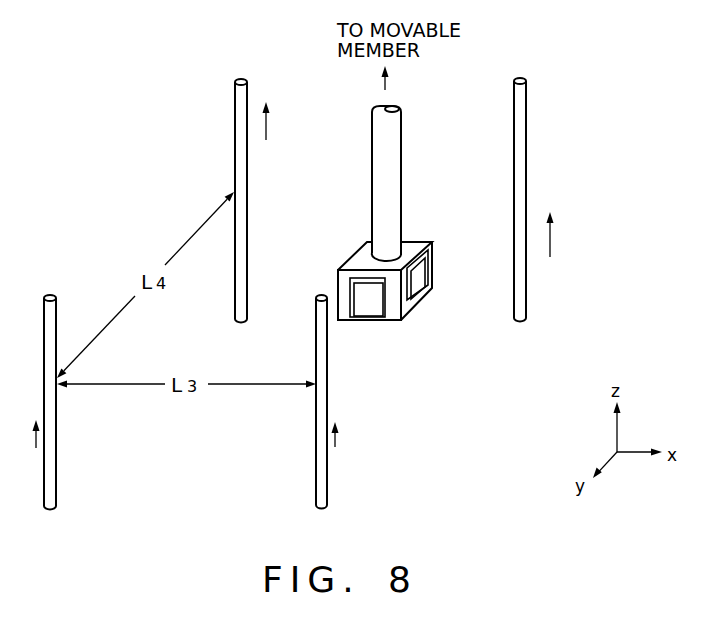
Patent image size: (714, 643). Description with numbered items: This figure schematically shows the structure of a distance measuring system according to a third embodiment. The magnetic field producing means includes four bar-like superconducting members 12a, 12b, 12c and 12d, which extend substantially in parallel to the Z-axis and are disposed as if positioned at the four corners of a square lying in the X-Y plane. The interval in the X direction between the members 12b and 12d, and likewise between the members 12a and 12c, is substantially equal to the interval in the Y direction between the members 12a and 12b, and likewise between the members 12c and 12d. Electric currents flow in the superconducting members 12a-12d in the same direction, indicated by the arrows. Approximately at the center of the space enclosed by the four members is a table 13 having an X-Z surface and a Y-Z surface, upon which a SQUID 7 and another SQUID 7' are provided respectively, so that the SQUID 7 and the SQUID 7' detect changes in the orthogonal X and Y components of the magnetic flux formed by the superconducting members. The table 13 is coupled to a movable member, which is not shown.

The SQUID 7 is at (367, 320).
The SQUID 7' is at (440, 275).
The superconducting member 12a is at (241, 320).
The superconducting member 12b is at (57, 502).
The superconducting member 12c is at (520, 320).
The superconducting member 12d is at (328, 500).
The table 13 is at (412, 244).